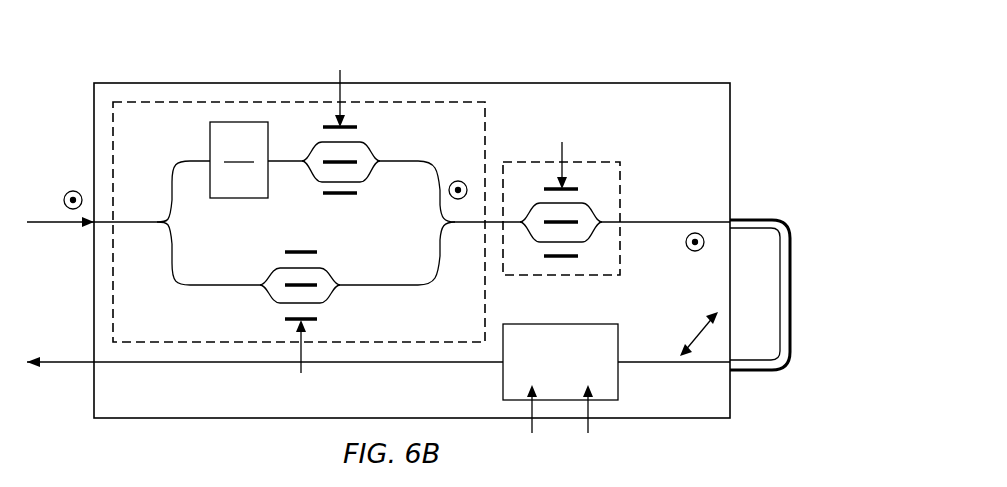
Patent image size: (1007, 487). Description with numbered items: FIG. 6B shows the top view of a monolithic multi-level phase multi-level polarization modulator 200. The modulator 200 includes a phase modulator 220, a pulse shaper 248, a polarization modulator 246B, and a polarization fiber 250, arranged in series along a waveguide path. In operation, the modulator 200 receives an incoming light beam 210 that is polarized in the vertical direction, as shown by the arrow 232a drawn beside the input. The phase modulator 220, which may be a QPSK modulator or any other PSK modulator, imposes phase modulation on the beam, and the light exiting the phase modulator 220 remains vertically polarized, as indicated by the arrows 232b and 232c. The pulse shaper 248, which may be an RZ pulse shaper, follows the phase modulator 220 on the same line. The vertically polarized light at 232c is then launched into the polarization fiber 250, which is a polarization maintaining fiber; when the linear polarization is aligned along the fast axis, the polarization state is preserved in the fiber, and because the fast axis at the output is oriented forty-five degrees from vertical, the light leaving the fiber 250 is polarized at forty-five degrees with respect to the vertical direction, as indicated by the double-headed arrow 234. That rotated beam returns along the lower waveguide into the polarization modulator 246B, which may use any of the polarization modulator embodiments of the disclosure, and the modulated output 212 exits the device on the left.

The monolithic multi-level phase multi-level polarization modulator 200 is at (569, 78).
The incoming light beam 210 is at (43, 222).
The optical output 212 is at (63, 364).
The phase modulator 220 is at (485, 283).
The arrow indicating vertical polarization 232a is at (72, 190).
The arrow indicating vertical polarization 232b is at (457, 181).
The vertical direction arrow 232c is at (692, 251).
The arrow indicating 45-degree polarization 234 is at (698, 331).
The polarization modulator 246B is at (585, 377).
The pulse shaper 248 is at (620, 203).
The polarization fiber 250 is at (757, 218).